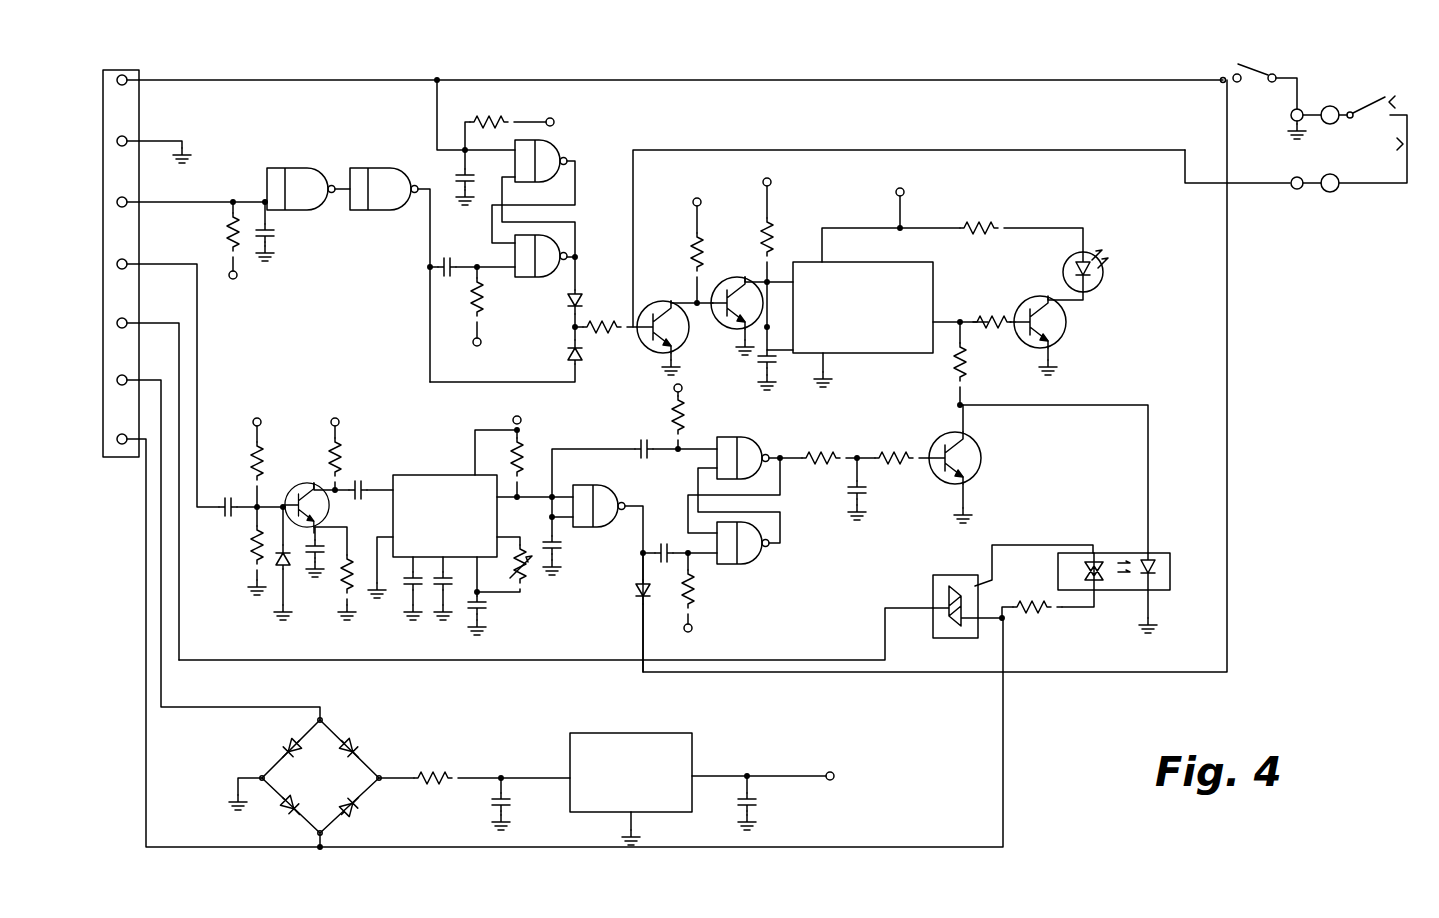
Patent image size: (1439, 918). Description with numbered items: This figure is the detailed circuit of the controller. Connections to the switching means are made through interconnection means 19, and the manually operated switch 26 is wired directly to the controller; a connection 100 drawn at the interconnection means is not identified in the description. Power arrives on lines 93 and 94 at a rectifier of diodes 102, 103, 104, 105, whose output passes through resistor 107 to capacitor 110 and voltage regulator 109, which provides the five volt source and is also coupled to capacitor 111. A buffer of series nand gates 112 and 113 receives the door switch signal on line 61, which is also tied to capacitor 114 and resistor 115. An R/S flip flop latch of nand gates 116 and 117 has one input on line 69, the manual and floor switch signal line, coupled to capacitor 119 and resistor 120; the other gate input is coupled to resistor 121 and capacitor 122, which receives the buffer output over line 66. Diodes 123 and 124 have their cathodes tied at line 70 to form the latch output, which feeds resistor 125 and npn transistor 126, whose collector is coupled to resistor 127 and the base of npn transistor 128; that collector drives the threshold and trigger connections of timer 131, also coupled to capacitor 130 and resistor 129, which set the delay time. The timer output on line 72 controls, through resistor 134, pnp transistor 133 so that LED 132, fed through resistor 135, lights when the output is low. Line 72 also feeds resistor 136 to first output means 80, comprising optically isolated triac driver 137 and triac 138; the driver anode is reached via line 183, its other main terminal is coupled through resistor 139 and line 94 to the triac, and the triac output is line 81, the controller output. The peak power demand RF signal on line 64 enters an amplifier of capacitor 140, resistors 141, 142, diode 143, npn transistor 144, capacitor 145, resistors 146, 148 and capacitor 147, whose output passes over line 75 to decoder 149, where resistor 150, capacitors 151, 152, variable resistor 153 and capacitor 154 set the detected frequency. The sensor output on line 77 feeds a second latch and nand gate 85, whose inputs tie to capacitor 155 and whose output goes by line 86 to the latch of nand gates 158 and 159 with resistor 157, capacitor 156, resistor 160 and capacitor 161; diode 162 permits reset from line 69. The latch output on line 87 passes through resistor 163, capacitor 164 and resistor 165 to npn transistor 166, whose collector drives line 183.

The interconnection means 19 is at (125, 69).
The manually operated switch 26 is at (1256, 68).
The door switch signal line 61 is at (178, 190).
The peak power demand RF signal line 64 is at (186, 327).
The buffer output line 66 is at (428, 252).
The manually operated switch and floor switch signal line 69 is at (398, 79).
The latch output line 70 is at (594, 322).
The timer output line 72 is at (950, 346).
The amplifier output line 75 is at (384, 496).
The frequency sensor output line 77 is at (526, 497).
The first output means 80 is at (1116, 544).
The controller output line 81 is at (546, 662).
The nand gate 85 is at (608, 485).
The inverter output line 86 is at (644, 516).
The latch output line 87 is at (785, 462).
The power line 93 is at (265, 690).
The power line 94 is at (210, 845).
The ground connection 100 is at (182, 141).
The diode 102 is at (294, 738).
The diode 103 is at (289, 816).
The diode 104 is at (366, 808).
The diode 105 is at (366, 745).
The resistor 107 is at (440, 774).
The voltage regulator 109 is at (692, 742).
The capacitor 110 is at (510, 806).
The capacitor 111 is at (756, 802).
The nand gate 112 is at (305, 168).
The nand gate 113 is at (387, 168).
The capacitor 114 is at (273, 230).
The resistor 115 is at (230, 235).
The nand gate 116 is at (561, 151).
The nand gate 117 is at (566, 238).
The capacitor 119 is at (455, 162).
The resistor 120 is at (496, 120).
The resistor 121 is at (484, 304).
The capacitor 122 is at (450, 262).
The diode 123 is at (578, 288).
The diode 124 is at (569, 358).
The resistor 125 is at (622, 344).
The npn transistor 126 is at (690, 352).
The resistor 127 is at (704, 240).
The npn transistor 128 is at (742, 268).
The resistor 129 is at (776, 222).
The capacitor 130 is at (786, 360).
The timer 131 is at (933, 292).
The LED 132 is at (1106, 272).
The pnp transistor 133 is at (1068, 328).
The resistor 134 is at (996, 314).
The resistor 135 is at (990, 220).
The resistor 136 is at (966, 362).
The optically isolated triac driver 137 is at (1170, 551).
The triac 138 is at (927, 635).
The resistor 139 is at (1042, 615).
The capacitor 140 is at (220, 488).
The resistor 141 is at (266, 456).
The resistor 142 is at (249, 553).
The diode 143 is at (280, 578).
The npn transistor 144 is at (308, 488).
The capacitor 145 is at (336, 548).
The resistor 146 is at (348, 460).
The capacitor 147 is at (373, 486).
The resistor 148 is at (340, 600).
The decoder 149 is at (440, 464).
The resistor 150 is at (522, 456).
The capacitor 151 is at (400, 602).
The capacitor 152 is at (432, 610).
The variable resistor 153 is at (510, 596).
The capacitor 154 is at (487, 618).
The capacitor 155 is at (558, 544).
The capacitor 156 is at (638, 440).
The resistor 157 is at (680, 419).
The nand gate 158 is at (766, 443).
The nand gate 159 is at (756, 558).
The resistor 160 is at (698, 596).
The capacitor 161 is at (670, 546).
The diode 162 is at (630, 595).
The resistor 163 is at (828, 456).
The capacitor 164 is at (866, 496).
The resistor 165 is at (897, 455).
The npn transistor 166 is at (970, 470).
The triac driver input line 183 is at (1130, 398).